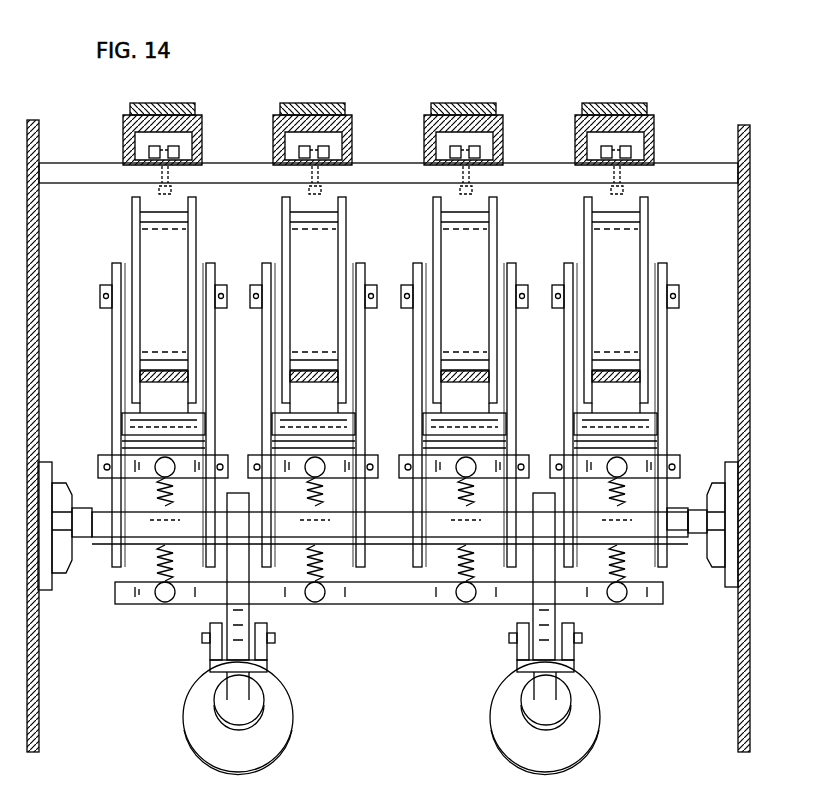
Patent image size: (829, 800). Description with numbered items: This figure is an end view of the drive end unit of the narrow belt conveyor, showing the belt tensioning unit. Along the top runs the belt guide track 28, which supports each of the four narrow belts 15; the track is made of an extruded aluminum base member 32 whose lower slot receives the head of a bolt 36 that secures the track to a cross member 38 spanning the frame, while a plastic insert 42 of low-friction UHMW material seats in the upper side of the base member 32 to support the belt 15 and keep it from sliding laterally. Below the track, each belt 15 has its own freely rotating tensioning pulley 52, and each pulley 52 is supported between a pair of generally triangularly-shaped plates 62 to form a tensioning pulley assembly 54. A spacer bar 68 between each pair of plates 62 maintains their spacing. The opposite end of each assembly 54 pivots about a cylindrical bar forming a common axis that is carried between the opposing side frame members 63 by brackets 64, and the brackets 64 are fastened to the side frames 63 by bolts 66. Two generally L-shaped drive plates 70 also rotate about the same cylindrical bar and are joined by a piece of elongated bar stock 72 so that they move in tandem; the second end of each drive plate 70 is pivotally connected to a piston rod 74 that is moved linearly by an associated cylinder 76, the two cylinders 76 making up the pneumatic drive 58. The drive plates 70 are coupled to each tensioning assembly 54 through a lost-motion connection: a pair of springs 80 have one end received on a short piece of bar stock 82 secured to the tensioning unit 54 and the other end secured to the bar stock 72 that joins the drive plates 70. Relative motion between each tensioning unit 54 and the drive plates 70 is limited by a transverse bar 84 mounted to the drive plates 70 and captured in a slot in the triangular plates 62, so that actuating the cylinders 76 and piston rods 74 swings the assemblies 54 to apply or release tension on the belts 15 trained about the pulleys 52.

The belt 15 is at (134, 104).
The belt guide track 28 is at (207, 150).
The base member 32 is at (124, 136).
The bolt 36 is at (312, 160).
The cross member 38 is at (686, 184).
The plastic insert 42 is at (166, 104).
The tensioning pulley 52 is at (152, 302).
The tensioning pulley assembly 54 is at (100, 276).
The pneumatic drive 58 is at (298, 733).
The triangularly-shaped plate 62 is at (113, 358).
The side frame member 63 is at (42, 340).
The bracket 64 is at (50, 576).
The bolt 66 is at (70, 546).
The spacer bar 68 is at (314, 412).
The drive plate 70 is at (238, 557).
The elongated bar stock 72 is at (368, 605).
The piston rod 74 is at (234, 688).
The cylinder 76 is at (226, 755).
The spring 80 is at (152, 585).
The short bar stock 82 is at (136, 466).
The transverse bar 84 is at (393, 525).